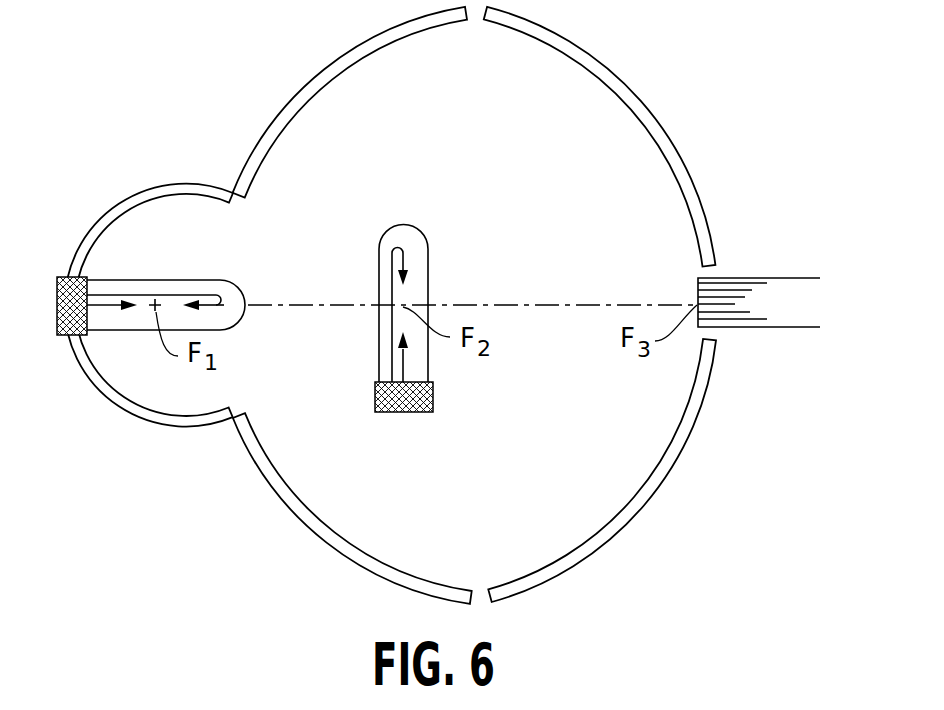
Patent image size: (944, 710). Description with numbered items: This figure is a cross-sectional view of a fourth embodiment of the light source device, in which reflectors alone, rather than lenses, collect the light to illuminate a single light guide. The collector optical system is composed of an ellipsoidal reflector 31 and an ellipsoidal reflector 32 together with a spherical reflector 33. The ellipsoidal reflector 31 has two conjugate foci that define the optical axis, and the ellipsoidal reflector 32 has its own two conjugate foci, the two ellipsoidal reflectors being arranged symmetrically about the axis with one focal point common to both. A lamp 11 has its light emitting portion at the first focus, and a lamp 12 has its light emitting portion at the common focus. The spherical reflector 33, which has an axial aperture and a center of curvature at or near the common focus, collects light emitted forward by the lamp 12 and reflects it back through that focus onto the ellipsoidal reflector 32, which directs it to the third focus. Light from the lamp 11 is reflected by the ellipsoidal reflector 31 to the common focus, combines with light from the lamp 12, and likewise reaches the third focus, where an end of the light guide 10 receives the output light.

The light guide 10 is at (782, 293).
The lamp 11 is at (121, 322).
The lamp 12 is at (415, 257).
The ellipsoidal reflector 31 is at (162, 203).
The ellipsoidal reflector 32 is at (330, 62).
The spherical reflector 33 is at (637, 97).